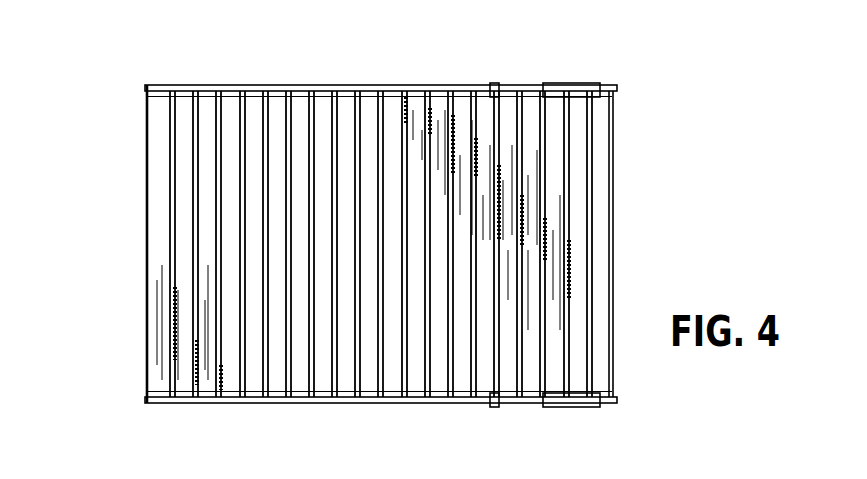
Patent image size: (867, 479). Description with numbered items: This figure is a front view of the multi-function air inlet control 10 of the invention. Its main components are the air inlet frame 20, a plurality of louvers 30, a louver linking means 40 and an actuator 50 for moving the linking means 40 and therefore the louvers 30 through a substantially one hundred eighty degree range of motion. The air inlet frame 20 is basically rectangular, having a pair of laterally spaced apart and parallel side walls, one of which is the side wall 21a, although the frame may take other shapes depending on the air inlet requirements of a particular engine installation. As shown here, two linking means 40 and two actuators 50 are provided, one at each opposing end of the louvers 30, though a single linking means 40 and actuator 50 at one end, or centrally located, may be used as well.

The air inlet control 10 is at (126, 283).
The air inlet frame 20 is at (613, 157).
The side wall 21a is at (438, 86).
The louvers 30 is at (226, 383).
The louver linking means 40 is at (190, 88).
The actuator 50 is at (523, 88).